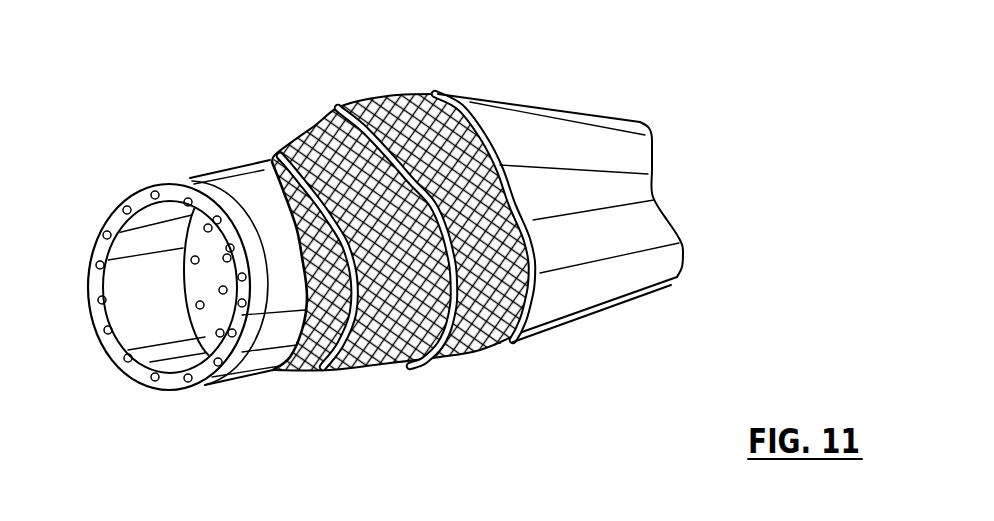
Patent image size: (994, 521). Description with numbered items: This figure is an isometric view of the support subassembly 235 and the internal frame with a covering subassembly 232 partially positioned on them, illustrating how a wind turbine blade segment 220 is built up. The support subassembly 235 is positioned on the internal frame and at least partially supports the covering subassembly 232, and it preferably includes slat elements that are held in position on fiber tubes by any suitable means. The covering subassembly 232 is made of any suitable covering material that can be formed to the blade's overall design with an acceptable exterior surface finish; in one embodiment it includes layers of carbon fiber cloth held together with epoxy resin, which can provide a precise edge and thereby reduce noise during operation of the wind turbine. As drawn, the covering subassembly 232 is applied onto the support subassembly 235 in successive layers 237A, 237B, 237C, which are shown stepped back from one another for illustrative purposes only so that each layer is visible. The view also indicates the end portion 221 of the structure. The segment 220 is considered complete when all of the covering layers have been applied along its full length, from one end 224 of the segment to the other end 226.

The segment 220 is at (426, 242).
The tubular body end portion 221 is at (638, 152).
The one end 224 is at (137, 186).
The other end 226 is at (677, 277).
The covering subassembly 232 is at (550, 303).
The support subassembly 235 is at (237, 362).
The layer 237A is at (262, 168).
The layer 237B is at (318, 128).
The layer 237C is at (389, 97).